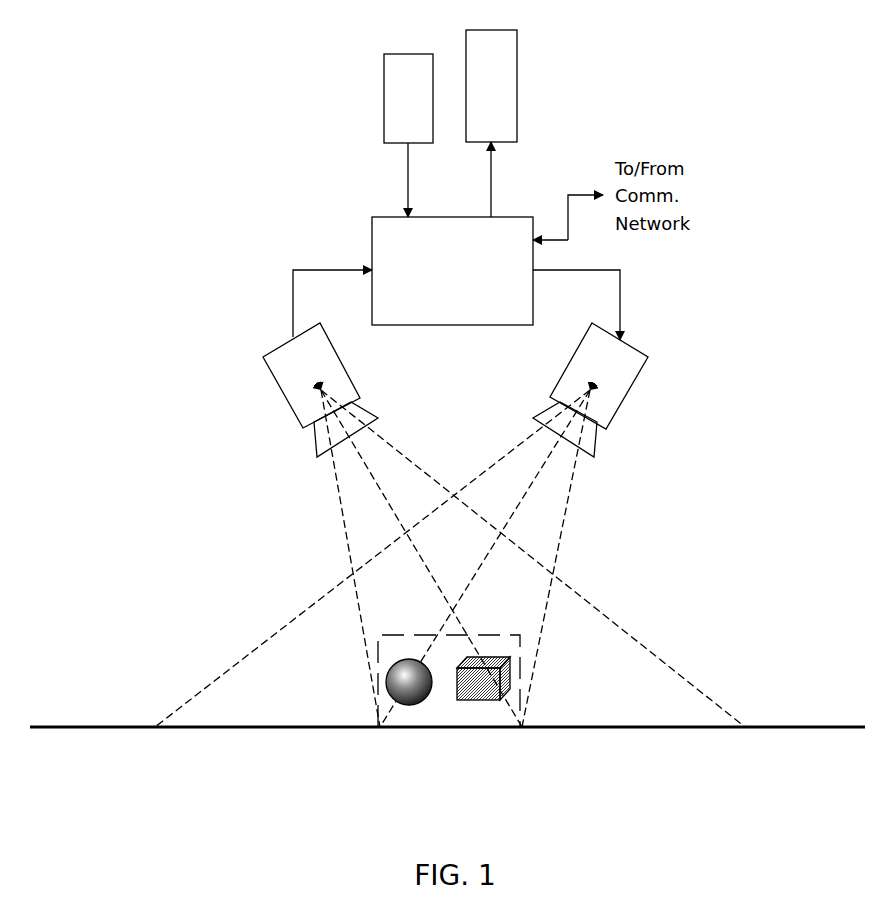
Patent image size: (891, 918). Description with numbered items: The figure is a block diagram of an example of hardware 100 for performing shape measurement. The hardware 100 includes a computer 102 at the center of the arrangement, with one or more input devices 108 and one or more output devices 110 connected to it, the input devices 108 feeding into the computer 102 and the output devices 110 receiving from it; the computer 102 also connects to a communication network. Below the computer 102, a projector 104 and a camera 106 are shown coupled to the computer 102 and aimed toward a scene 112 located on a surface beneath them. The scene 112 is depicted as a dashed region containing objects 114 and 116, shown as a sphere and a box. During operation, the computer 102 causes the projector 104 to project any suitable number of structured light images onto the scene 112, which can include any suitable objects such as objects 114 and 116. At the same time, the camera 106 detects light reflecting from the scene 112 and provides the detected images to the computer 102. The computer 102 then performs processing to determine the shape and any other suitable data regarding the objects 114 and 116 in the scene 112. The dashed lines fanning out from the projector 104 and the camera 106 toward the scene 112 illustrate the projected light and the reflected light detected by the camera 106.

The hardware 100 is at (760, 113).
The computer 102 is at (372, 217).
The projector 104 is at (650, 350).
The camera 106 is at (265, 352).
The input devices 108 is at (384, 98).
The output devices 110 is at (517, 85).
The scene 112 is at (377, 682).
The object 114 is at (409, 705).
The object 116 is at (477, 700).